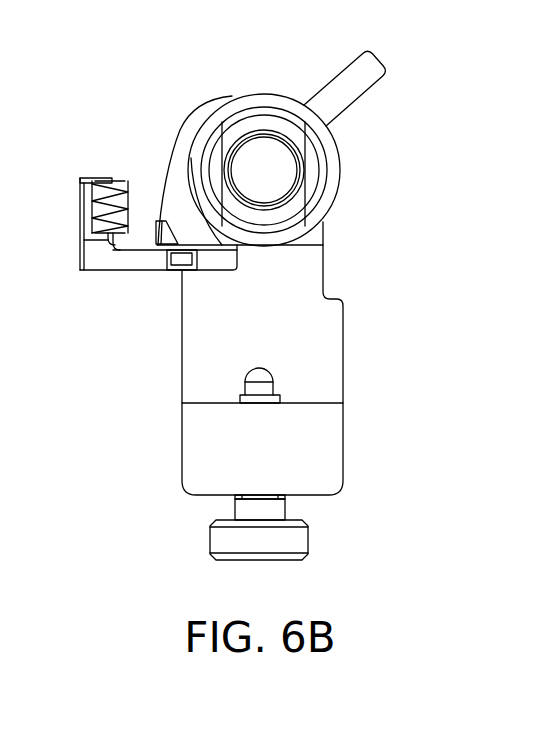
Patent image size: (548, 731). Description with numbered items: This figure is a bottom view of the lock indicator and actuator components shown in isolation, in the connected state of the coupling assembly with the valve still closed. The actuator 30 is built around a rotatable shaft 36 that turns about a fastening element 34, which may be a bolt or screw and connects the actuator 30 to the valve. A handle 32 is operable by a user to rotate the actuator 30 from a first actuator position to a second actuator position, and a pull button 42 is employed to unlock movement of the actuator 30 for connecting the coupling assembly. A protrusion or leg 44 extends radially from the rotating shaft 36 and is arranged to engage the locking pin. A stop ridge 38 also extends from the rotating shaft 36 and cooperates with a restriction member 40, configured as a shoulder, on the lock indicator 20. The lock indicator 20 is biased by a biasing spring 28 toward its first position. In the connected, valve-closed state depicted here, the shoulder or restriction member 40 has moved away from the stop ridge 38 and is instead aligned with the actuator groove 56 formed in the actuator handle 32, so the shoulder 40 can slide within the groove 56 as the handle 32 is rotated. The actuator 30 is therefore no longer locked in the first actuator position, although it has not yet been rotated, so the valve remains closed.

The actuator 30 is at (221, 80).
The lock indicator 20 is at (73, 262).
The biasing spring 28 is at (100, 178).
The handle 32 is at (195, 441).
The fastening element 34 is at (262, 176).
The rotatable shaft 36 is at (330, 205).
The stop ridge 38 is at (165, 220).
The restriction member 40 is at (215, 260).
The pull button 42 is at (277, 560).
The leg 44 is at (367, 67).
The actuator groove 56 is at (181, 175).